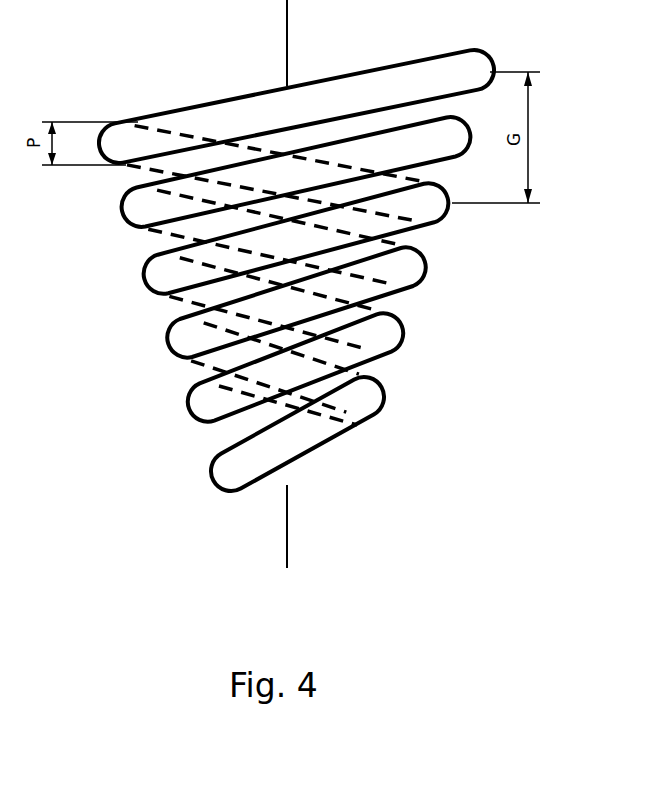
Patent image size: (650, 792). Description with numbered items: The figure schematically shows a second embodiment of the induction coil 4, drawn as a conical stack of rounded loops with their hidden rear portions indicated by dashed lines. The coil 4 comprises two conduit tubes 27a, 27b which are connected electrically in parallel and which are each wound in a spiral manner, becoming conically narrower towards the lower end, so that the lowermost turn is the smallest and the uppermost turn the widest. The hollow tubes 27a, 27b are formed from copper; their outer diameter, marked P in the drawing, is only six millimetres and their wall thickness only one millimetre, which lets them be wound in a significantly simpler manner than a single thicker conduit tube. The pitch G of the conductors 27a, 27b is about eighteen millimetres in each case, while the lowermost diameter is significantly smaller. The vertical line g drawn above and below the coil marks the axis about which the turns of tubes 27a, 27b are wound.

The coil 4 is at (313, 287).
The conduit tube 27a is at (216, 483).
The conduit tube 27b is at (196, 423).
The spring axis g is at (288, 527).